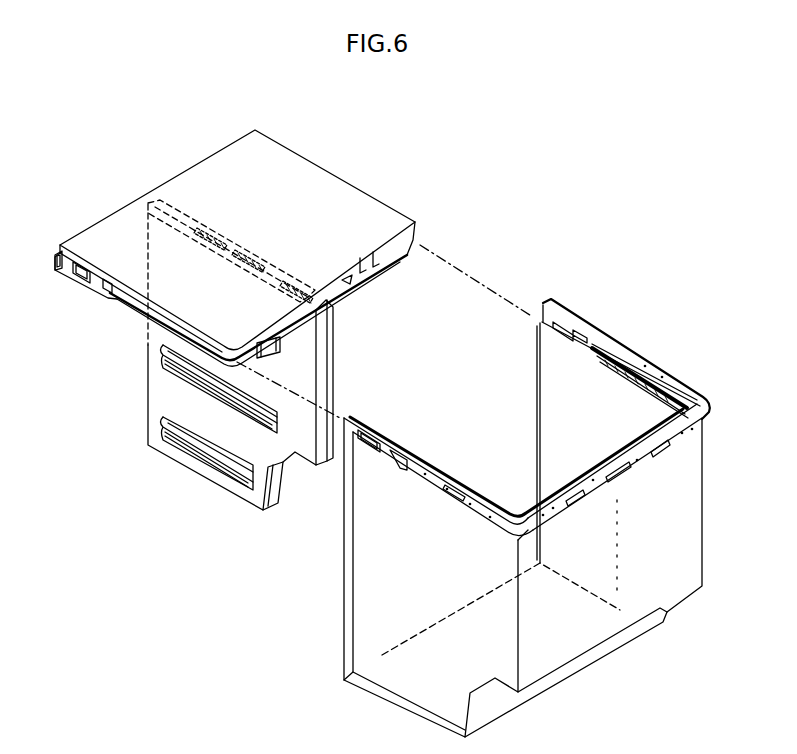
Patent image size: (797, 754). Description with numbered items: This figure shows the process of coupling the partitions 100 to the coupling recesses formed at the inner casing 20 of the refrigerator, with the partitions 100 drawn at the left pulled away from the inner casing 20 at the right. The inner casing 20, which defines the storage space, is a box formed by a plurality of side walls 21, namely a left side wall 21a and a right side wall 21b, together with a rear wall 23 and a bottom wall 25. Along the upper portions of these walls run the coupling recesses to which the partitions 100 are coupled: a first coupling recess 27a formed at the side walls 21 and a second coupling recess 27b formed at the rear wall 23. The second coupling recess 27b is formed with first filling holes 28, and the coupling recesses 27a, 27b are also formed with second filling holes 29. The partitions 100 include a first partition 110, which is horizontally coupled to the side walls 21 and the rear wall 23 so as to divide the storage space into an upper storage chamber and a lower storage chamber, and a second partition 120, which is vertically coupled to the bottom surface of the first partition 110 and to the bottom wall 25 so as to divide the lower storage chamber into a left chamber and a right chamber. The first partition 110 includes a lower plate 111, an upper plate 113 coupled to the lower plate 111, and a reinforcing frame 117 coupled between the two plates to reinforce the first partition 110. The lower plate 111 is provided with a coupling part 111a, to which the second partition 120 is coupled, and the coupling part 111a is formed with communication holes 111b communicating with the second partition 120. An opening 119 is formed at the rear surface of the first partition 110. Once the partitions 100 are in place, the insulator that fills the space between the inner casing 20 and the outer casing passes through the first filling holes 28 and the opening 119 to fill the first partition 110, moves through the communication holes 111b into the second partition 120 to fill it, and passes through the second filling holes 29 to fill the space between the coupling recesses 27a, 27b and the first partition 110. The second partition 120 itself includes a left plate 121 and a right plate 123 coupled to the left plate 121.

The partitions 100 is at (62, 345).
The first partition 110 is at (128, 305).
The lower plate 111 is at (98, 282).
The coupling part 111a is at (158, 204).
The communication holes 111b is at (293, 283).
The upper plate 113 is at (327, 190).
The reinforcing frame 117 is at (55, 253).
The opening 119 is at (347, 283).
The second partition 120 is at (147, 418).
The left plate 121 is at (332, 363).
The right plate 123 is at (237, 440).
The inner casing 20 is at (587, 208).
The side walls 21 is at (533, 236).
The left side wall 21a is at (563, 372).
The right side wall 21b is at (417, 508).
The rear wall 23 is at (540, 603).
The bottom wall 25 is at (637, 490).
The first coupling recess 27a is at (457, 492).
The second coupling recess 27b is at (672, 445).
The first filling holes 28 is at (650, 443).
The second filling holes 29 is at (665, 379).